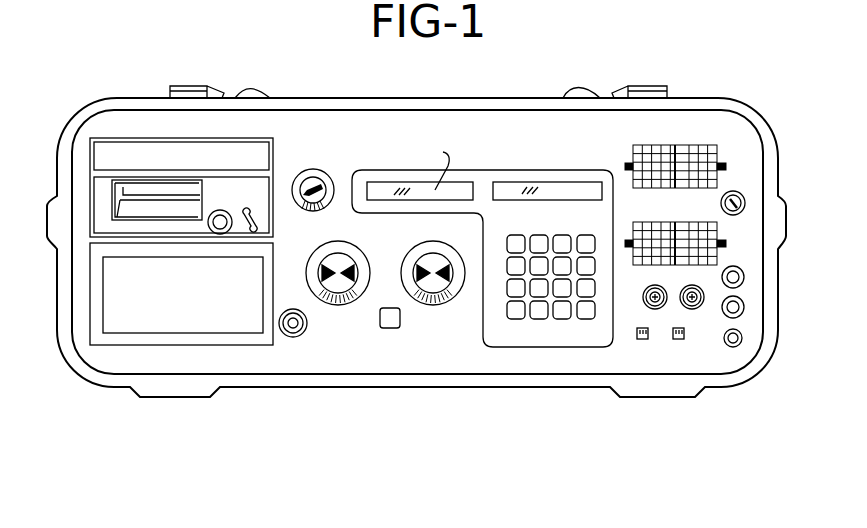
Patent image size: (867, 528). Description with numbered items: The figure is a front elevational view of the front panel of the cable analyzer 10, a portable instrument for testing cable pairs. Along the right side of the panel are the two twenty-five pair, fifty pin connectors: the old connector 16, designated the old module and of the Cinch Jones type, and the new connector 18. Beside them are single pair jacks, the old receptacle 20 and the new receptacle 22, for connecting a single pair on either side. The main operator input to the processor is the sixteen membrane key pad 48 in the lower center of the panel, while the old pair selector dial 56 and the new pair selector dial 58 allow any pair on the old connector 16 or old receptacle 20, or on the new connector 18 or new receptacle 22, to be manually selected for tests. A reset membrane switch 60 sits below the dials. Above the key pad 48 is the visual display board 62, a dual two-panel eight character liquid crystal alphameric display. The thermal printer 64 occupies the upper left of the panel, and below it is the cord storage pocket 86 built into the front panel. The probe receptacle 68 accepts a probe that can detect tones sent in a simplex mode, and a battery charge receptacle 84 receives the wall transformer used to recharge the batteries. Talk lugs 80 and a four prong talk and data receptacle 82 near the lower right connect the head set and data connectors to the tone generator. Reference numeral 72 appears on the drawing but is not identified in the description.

The cable analyzer 10 is at (502, 83).
The old connector 16 is at (647, 144).
The new connector 18 is at (647, 222).
The old receptacle 20 is at (728, 192).
The new receptacle 22 is at (725, 267).
The sixteen membrane key pad 48 is at (506, 314).
The old pair selector dial 56 is at (357, 250).
The new pair selector dial 58 is at (433, 242).
The reset membrane switch 60 is at (390, 328).
The visual display board 62 is at (517, 170).
The thermal printer 64 is at (240, 154).
The probe receptacle 68 is at (744, 307).
The jack 72 is at (742, 340).
The talk lugs 80 is at (678, 339).
The talk and data receptacle 82 is at (650, 287).
The battery charge receptacle 84 is at (300, 335).
The cord storage pocket 86 is at (172, 310).